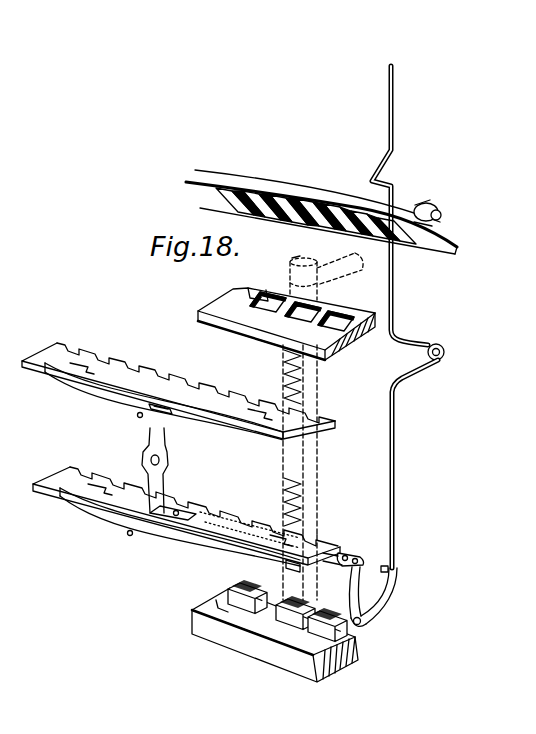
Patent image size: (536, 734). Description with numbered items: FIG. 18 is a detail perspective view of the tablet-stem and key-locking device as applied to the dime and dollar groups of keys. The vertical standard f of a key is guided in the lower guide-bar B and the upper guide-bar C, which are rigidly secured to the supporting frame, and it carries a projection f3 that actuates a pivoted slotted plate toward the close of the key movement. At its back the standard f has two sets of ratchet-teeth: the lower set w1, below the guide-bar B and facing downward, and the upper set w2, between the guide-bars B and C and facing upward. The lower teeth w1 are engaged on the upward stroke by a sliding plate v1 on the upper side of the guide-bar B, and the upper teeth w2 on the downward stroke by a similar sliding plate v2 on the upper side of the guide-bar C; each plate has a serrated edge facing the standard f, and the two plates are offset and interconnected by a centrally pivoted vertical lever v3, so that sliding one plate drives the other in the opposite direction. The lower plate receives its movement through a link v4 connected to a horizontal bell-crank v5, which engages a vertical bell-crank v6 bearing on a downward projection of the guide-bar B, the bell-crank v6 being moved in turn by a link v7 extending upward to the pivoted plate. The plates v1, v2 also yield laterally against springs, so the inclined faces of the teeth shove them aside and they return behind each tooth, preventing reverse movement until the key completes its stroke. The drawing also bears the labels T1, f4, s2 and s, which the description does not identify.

The slotted rail bar T' T1 is at (417, 241).
The post head f4 is at (290, 262).
The projection f3 is at (340, 268).
The guide-bar C is at (286, 324).
The standard f is at (305, 440).
The link v4 is at (306, 576).
The upper set of ratchet-teeth w2 is at (283, 381).
The lower set of ratchet-teeth w1 is at (284, 499).
The sliding plate v2 is at (330, 429).
The leaf spring s2 is at (115, 404).
The vertical lever v3 is at (168, 480).
The sliding plate v1 is at (63, 479).
The leaf spring s is at (120, 528).
The horizontal bell-crank v5 is at (344, 555).
The vertical bell-crank v6 is at (376, 617).
The link v7 is at (395, 483).
The guide-bar B is at (280, 631).